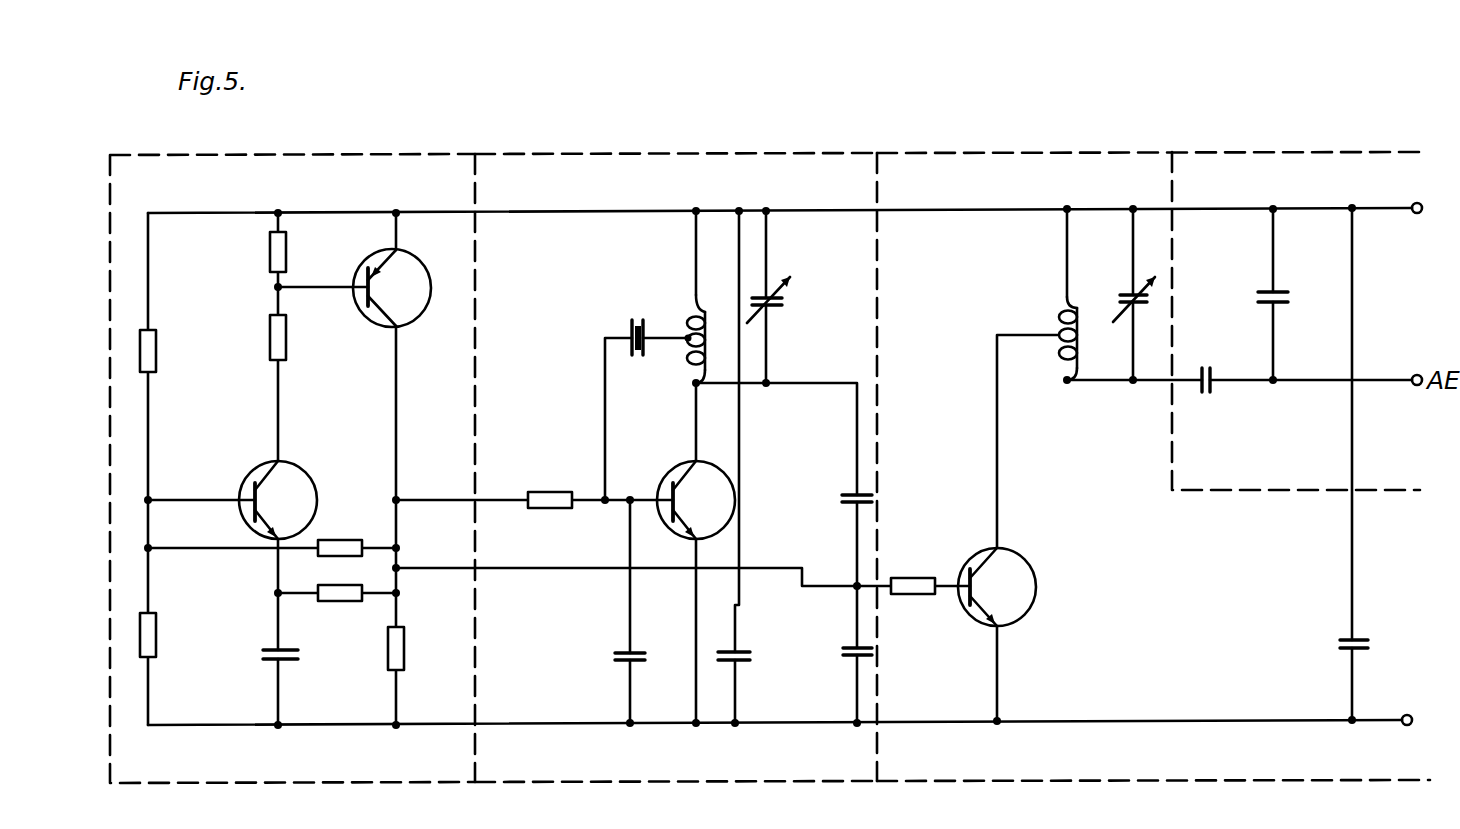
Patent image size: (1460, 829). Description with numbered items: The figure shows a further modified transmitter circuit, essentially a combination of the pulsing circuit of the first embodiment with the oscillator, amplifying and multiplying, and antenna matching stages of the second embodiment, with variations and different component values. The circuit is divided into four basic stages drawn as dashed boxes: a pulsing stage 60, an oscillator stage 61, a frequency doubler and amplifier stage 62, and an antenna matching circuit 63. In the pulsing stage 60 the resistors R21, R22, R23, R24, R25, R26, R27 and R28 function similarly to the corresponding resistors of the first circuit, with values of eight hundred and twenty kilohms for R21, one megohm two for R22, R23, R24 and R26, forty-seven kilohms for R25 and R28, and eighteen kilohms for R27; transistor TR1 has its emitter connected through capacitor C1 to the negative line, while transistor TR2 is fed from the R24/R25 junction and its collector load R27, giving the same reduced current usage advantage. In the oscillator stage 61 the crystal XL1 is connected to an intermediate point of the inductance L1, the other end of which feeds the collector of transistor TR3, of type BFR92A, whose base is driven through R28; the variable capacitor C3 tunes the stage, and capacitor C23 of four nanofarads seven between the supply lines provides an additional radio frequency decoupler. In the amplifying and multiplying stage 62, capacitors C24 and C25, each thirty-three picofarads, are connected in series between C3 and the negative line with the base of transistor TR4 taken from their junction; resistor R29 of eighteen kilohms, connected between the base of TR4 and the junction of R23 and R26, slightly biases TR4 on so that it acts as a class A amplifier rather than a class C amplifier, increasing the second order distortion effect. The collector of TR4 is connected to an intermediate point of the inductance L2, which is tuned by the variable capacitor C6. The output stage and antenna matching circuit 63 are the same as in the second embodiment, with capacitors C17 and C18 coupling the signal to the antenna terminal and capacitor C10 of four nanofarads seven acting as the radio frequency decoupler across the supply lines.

The pulsing stage 60 is at (335, 154).
The oscillator stage 61 is at (697, 152).
The frequency doubler and amplifier stage 62 is at (1010, 152).
The antenna matching circuit 63 is at (1403, 490).
The resistor R21 is at (157, 348).
The resistor R22 is at (157, 642).
The resistor R23 is at (348, 540).
The resistor R24 is at (287, 248).
The resistor R25 is at (287, 337).
The resistor R26 is at (339, 601).
The resistor R27 is at (405, 650).
The resistor R28 is at (548, 490).
The resistor R29 is at (918, 576).
The capacitor C1 is at (286, 661).
The variable capacitor C3 is at (786, 309).
The variable capacitor C6 is at (1120, 297).
The capacitor C10 is at (1361, 648).
The capacitor C17 is at (1212, 386).
The capacitor C18 is at (1289, 292).
The capacitor C23 is at (738, 650).
The capacitor C24 is at (847, 508).
The capacitor C25 is at (852, 658).
The inductance L1 is at (706, 299).
The inductance L2 is at (1058, 318).
The crystal XL1 is at (646, 322).
The transistor TR1 is at (256, 474).
The transistor TR2 is at (431, 279).
The transistor TR3 is at (675, 468).
The transistor TR4 is at (1017, 623).